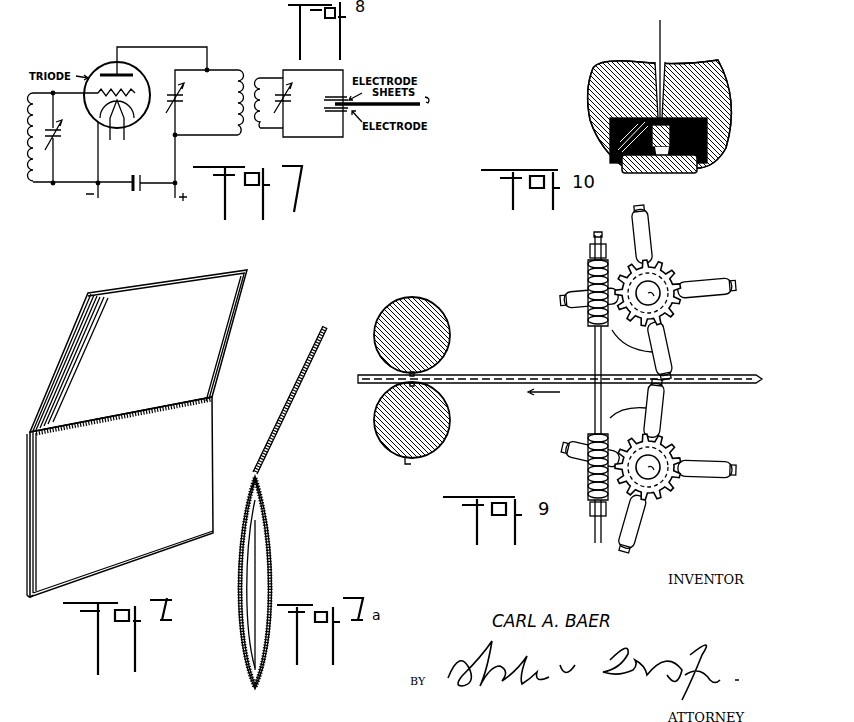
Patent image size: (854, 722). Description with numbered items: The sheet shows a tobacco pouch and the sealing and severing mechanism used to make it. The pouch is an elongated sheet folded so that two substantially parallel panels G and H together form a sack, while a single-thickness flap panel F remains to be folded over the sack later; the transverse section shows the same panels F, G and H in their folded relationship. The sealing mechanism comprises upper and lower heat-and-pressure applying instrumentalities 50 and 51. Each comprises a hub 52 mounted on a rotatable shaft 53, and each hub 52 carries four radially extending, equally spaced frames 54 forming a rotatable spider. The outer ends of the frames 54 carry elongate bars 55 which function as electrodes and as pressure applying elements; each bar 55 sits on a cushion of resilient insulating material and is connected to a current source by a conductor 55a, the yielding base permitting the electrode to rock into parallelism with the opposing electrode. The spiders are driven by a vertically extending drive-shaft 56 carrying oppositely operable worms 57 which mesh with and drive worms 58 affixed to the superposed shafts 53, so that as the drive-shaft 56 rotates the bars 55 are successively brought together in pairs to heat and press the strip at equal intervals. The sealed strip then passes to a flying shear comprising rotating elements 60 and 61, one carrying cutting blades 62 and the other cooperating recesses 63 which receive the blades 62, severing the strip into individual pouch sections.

In FIG. 9, the upper heat-and-pressure applying instrumentality 50 is at (673, 252).
In FIG. 9, the lower heat-and-pressure applying instrumentality 51 is at (696, 455).
In FIG. 9, the hub 52 is at (686, 302).
In FIG. 9, the rotatable shaft 53 is at (656, 290).
In FIG. 10, the radially extending frame 54 is at (716, 77).
In FIG. 9, the radially extending frame 54 is at (650, 240).
In FIG. 10, the elongate bar 55 is at (690, 173).
In FIG. 9, the elongate bar 55 is at (640, 222).
In FIG. 10, the conductor 55a is at (661, 41).
In FIG. 10, the drive-shaft 56 is at (705, 163).
In FIG. 9, the drive-shaft 56 is at (596, 346).
In FIG. 9, the worm 57 is at (590, 283).
In FIG. 9, the worm 58 is at (679, 316).
In FIG. 9, the rotating element 60 is at (447, 331).
In FIG. 9, the rotating element 61 is at (446, 430).
In FIG. 9, the cutting blade 62 is at (423, 298).
In FIG. 9, the recess 63 is at (420, 458).
In FIG. 4, the flap panel F is at (186, 331).
In FIG. 4A, the flap panel F is at (291, 399).
In FIG. 4, the panel G is at (137, 495).
In FIG. 4A, the panel G is at (270, 592).
In FIG. 4A, the panel H is at (246, 592).